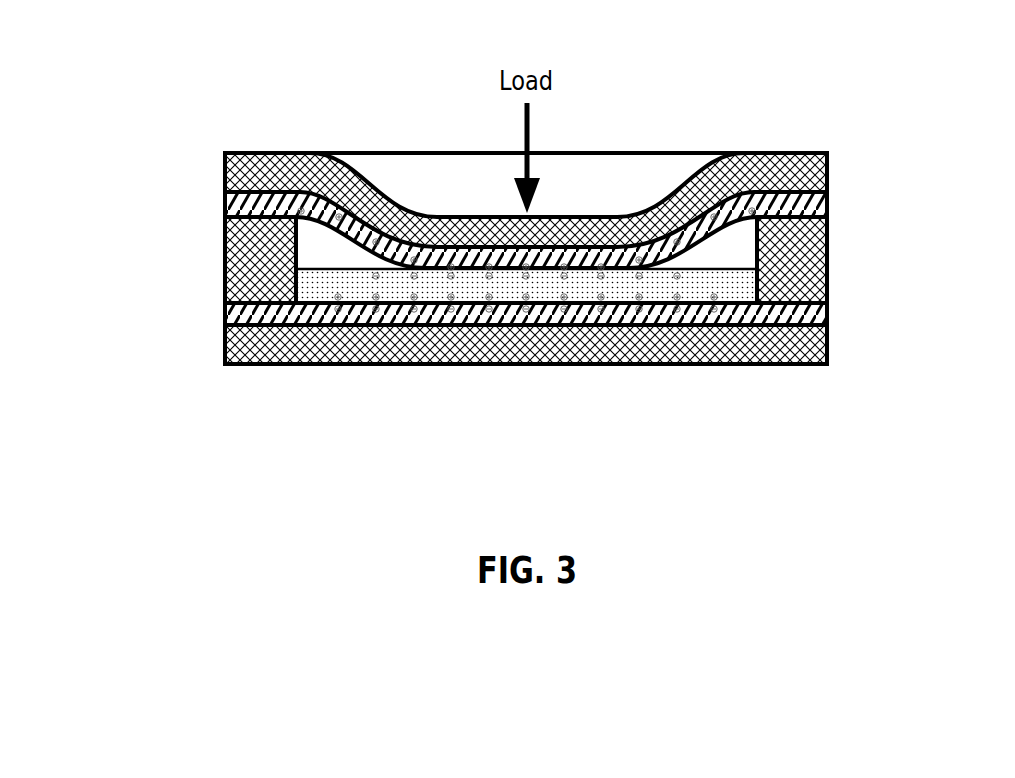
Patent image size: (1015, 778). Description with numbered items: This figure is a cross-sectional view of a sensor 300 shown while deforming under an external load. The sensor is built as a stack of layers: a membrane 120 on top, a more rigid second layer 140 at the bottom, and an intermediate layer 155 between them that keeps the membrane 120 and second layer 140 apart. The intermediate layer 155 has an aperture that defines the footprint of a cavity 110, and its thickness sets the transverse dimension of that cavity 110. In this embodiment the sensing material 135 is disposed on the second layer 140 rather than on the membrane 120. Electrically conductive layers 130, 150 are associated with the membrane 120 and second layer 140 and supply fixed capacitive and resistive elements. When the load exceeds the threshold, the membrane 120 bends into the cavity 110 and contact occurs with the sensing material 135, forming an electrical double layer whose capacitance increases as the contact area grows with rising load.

The sensor 300 is at (212, 131).
The membrane 120 is at (498, 218).
The electrically conductive layer 130 is at (827, 200).
The intermediate layer 155 is at (827, 262).
The cavity 110 is at (330, 253).
The sensing material 135 is at (310, 293).
The electrically conductive layer 150 is at (827, 313).
The second layer 140 is at (657, 368).